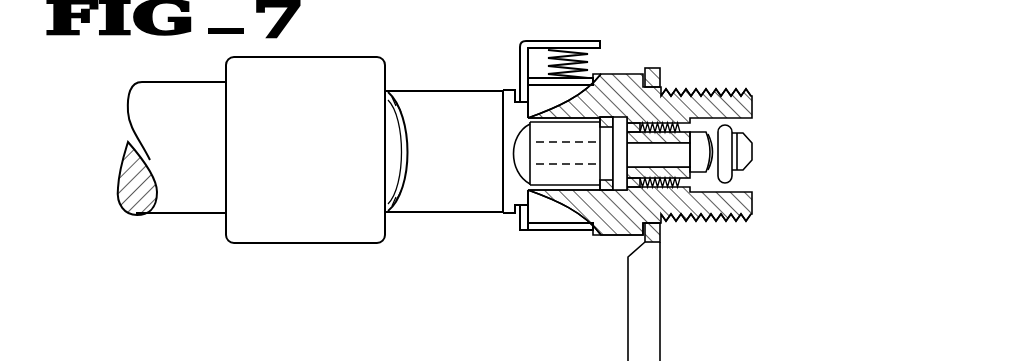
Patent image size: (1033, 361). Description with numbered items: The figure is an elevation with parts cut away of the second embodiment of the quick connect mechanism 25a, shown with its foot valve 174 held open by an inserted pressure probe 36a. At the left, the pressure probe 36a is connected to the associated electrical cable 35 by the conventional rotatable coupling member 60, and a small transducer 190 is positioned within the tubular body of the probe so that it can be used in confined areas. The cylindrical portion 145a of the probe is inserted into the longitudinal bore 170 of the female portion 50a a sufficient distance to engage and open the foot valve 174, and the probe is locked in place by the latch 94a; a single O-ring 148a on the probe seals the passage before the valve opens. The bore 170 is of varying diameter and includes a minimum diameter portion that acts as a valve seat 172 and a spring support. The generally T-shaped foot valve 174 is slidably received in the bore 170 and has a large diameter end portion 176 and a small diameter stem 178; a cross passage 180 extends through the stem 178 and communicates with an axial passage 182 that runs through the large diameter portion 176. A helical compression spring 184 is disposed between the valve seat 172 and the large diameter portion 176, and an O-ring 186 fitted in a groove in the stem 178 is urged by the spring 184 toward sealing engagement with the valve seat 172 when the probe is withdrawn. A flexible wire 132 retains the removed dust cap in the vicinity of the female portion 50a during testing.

The electrical cable 35 is at (140, 119).
The coupling member 60 is at (302, 158).
The small transducer 190 is at (388, 153).
The pressure probe 36a is at (429, 85).
The latch 94a is at (517, 57).
The quick connect mechanism 25a is at (723, 51).
The female portion 50a is at (732, 88).
The cross passage 180 is at (726, 194).
The valve seat 172 is at (702, 217).
The axial passage 182 is at (611, 153).
The large diameter end portion 176 is at (640, 189).
The O-ring 148a is at (530, 123).
The cylindrical portion 145a is at (545, 153).
The longitudinal bore 170 is at (530, 181).
The foot valve 174 is at (622, 117).
The helical compression spring 184 is at (643, 130).
The small diameter stem 178 is at (750, 147).
The O-ring 186 is at (746, 126).
The flexible wire 132 is at (684, 301).